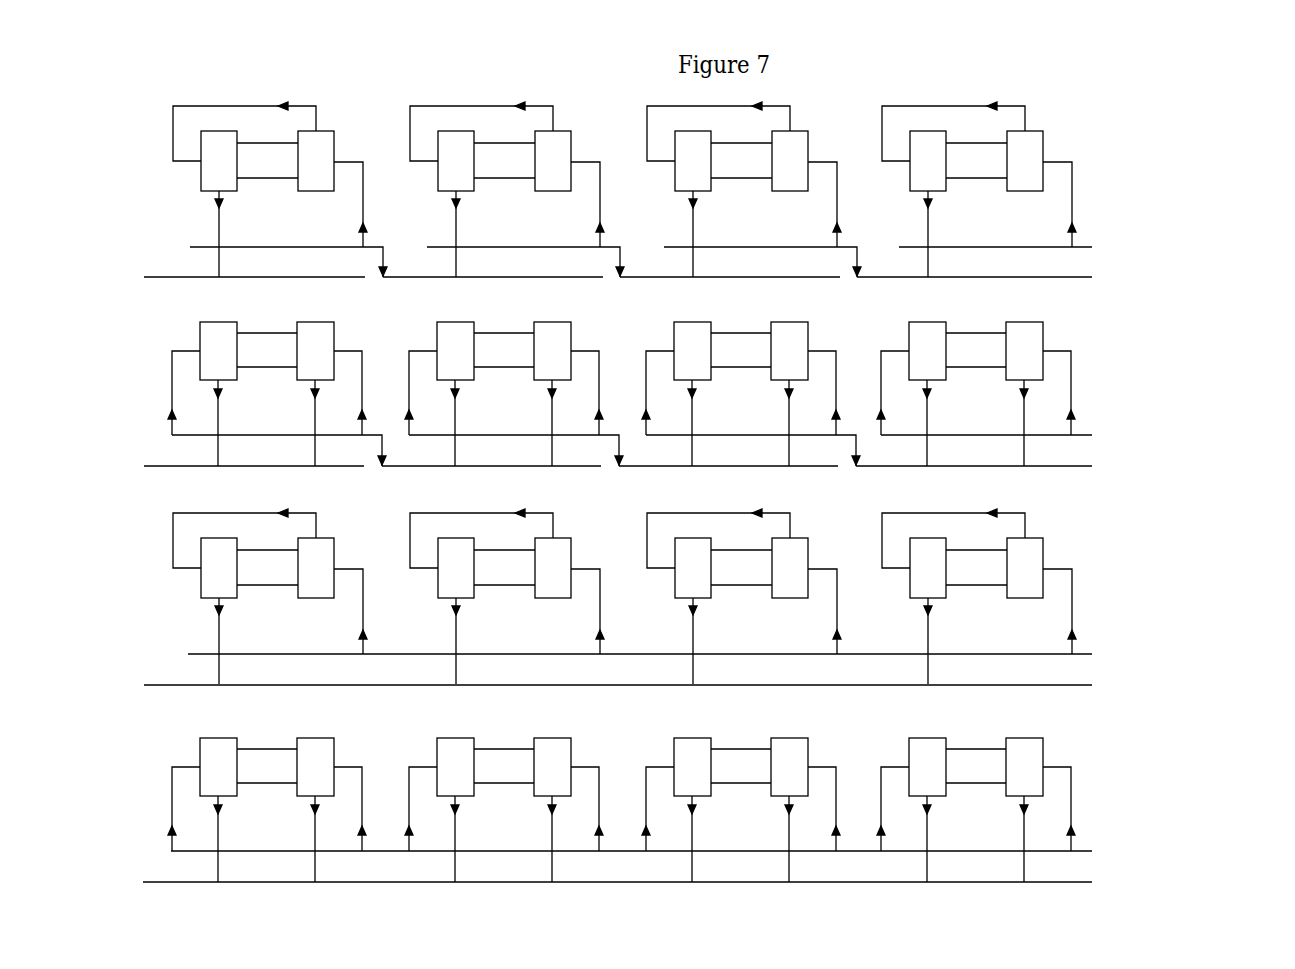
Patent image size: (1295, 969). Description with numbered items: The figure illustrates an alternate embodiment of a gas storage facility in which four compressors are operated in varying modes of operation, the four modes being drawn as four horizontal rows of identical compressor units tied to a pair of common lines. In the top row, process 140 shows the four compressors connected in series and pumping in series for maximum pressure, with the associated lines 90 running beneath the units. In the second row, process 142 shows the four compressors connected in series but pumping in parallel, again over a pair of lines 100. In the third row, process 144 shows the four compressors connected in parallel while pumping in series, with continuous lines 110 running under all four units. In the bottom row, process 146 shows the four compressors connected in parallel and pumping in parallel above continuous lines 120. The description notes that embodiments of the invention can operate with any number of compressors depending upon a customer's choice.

The process 140 is at (1130, 150).
The first pair of bus lines 90 is at (686, 249).
The process 142 is at (1128, 380).
The second pair of bus lines 100 is at (686, 439).
The process 144 is at (1116, 598).
The third pair of bus lines 110 is at (686, 658).
The process 146 is at (1125, 777).
The fourth pair of bus lines 120 is at (685, 855).